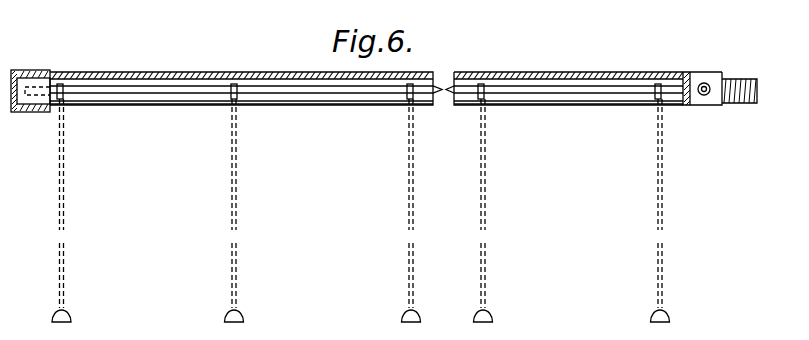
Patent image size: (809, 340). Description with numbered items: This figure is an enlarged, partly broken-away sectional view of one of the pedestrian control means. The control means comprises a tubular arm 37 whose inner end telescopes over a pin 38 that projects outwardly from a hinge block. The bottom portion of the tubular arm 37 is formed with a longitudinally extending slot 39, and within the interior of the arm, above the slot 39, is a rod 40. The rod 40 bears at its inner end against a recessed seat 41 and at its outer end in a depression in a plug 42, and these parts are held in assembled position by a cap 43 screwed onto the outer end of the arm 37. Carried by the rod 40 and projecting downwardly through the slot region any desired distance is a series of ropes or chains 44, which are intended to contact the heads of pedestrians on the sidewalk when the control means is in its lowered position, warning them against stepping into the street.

The tubular arm 37 is at (213, 72).
The pin 38 is at (736, 84).
The longitudinally extending slot 39 is at (547, 106).
The rod 40 is at (135, 88).
The recessed seat 41 is at (690, 80).
The plug 42 is at (36, 112).
The cap 43 is at (23, 72).
The ropes or chains 44 is at (65, 208).